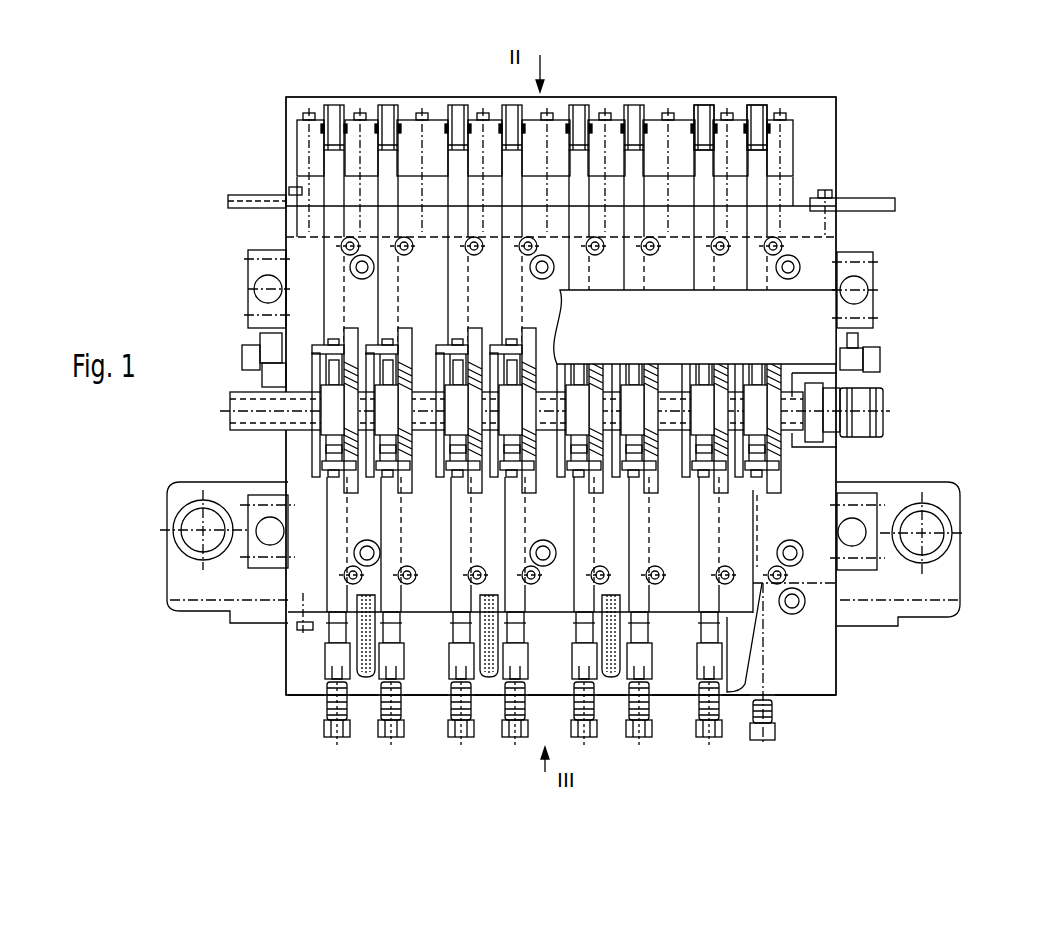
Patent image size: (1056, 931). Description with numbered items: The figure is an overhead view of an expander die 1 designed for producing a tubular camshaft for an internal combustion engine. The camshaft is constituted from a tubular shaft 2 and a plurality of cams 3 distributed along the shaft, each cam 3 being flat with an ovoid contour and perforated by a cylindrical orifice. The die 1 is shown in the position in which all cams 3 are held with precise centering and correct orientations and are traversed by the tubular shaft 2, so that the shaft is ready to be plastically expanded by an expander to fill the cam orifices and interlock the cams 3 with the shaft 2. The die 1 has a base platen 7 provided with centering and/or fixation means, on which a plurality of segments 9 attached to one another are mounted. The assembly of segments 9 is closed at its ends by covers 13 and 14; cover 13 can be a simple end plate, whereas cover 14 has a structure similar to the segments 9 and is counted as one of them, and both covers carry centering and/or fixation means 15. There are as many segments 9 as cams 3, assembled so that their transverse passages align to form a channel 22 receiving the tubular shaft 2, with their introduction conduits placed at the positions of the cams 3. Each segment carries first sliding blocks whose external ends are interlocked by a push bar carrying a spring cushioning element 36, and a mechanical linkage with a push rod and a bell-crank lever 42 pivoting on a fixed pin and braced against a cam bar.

The expander die 1 is at (204, 277).
The tubular shaft 2 is at (258, 417).
The cam 3 is at (757, 413).
The base platen 7 is at (822, 137).
The segment 9 is at (430, 172).
The cover 13 is at (305, 253).
The cover 14 is at (817, 277).
The centering and/or fixation means 15 is at (897, 498).
The channel 22 is at (300, 430).
The spring cushioning element 36 is at (452, 663).
The bell-crank lever 42 is at (758, 122).